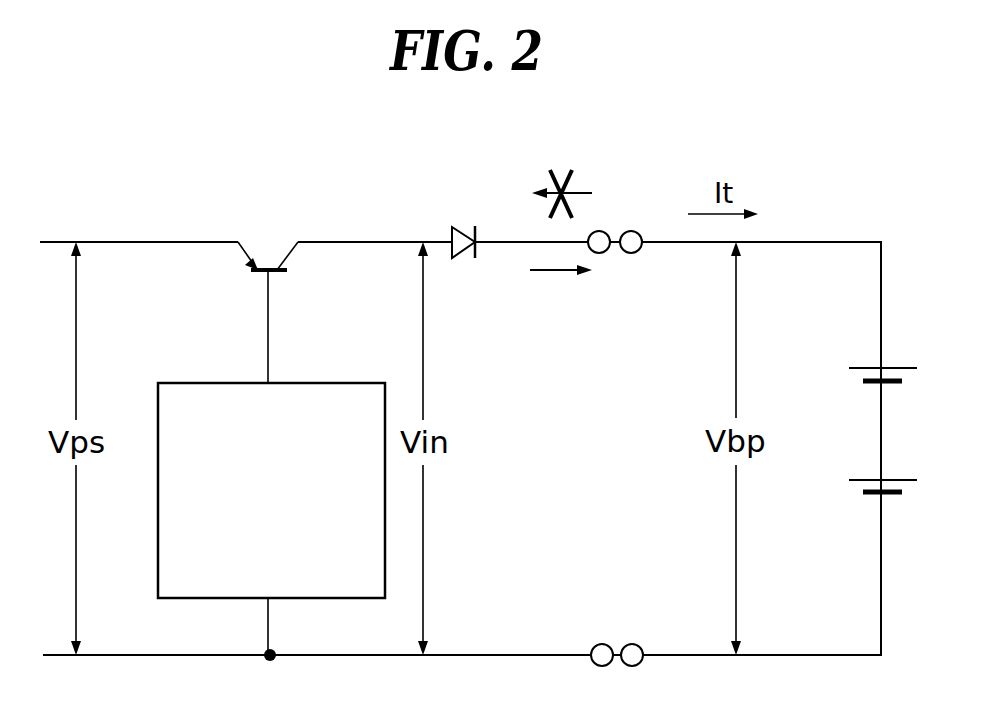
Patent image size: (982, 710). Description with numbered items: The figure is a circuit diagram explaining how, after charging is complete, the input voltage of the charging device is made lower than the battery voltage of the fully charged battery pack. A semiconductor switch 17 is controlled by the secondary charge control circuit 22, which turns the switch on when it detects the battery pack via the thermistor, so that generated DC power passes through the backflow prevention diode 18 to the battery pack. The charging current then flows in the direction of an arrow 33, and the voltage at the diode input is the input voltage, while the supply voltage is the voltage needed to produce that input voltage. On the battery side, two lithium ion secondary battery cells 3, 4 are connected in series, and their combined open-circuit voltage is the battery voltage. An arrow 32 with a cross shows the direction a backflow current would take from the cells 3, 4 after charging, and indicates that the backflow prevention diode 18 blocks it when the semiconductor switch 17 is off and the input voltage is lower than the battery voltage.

The lithium ion secondary battery cell 3 is at (890, 384).
The lithium ion secondary battery cell 4 is at (890, 495).
The semiconductor switch 17 is at (260, 274).
The backflow prevention diode 18 is at (453, 218).
The secondary charge control circuit 22 is at (158, 537).
The arrow with a cross 32 is at (592, 193).
The arrow 33 is at (555, 270).